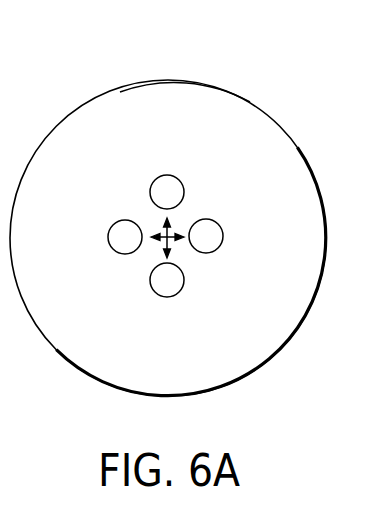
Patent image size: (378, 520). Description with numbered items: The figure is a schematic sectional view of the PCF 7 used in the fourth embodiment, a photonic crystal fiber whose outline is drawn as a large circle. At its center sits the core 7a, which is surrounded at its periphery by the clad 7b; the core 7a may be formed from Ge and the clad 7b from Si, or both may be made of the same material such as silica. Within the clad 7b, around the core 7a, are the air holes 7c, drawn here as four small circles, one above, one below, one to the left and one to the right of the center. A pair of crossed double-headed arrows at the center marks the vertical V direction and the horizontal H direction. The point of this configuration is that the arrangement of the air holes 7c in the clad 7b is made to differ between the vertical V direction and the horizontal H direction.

The PCF 7 is at (298, 130).
The core 7a is at (150, 258).
The clad 7b is at (198, 93).
The air holes 7c is at (166, 175).
The vertical direction V is at (172, 221).
The horizontal direction H is at (179, 240).